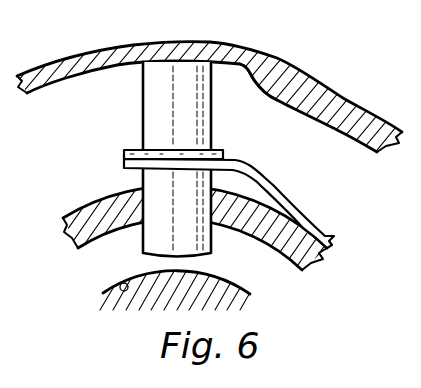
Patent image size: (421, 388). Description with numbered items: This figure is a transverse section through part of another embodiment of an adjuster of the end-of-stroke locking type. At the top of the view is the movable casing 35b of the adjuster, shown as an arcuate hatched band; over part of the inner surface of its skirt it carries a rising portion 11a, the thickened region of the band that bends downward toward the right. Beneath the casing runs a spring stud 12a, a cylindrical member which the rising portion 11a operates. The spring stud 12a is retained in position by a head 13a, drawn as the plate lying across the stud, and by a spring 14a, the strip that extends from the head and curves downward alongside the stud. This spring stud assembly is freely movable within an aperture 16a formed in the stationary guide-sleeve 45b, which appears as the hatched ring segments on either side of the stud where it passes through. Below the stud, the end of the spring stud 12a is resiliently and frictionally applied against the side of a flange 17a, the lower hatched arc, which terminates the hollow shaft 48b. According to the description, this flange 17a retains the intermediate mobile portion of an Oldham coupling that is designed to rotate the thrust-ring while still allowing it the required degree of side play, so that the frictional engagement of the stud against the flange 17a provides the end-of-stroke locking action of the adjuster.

The rising portion 11a is at (303, 112).
The spring stud 12a is at (197, 137).
The head 13a is at (225, 153).
The spring 14a is at (263, 181).
The aperture 16a is at (215, 202).
The flange 17a is at (246, 291).
The movable casing 35b is at (265, 62).
The stationary guide-sleeve 45b is at (90, 207).
The hollow shaft 48b is at (118, 283).